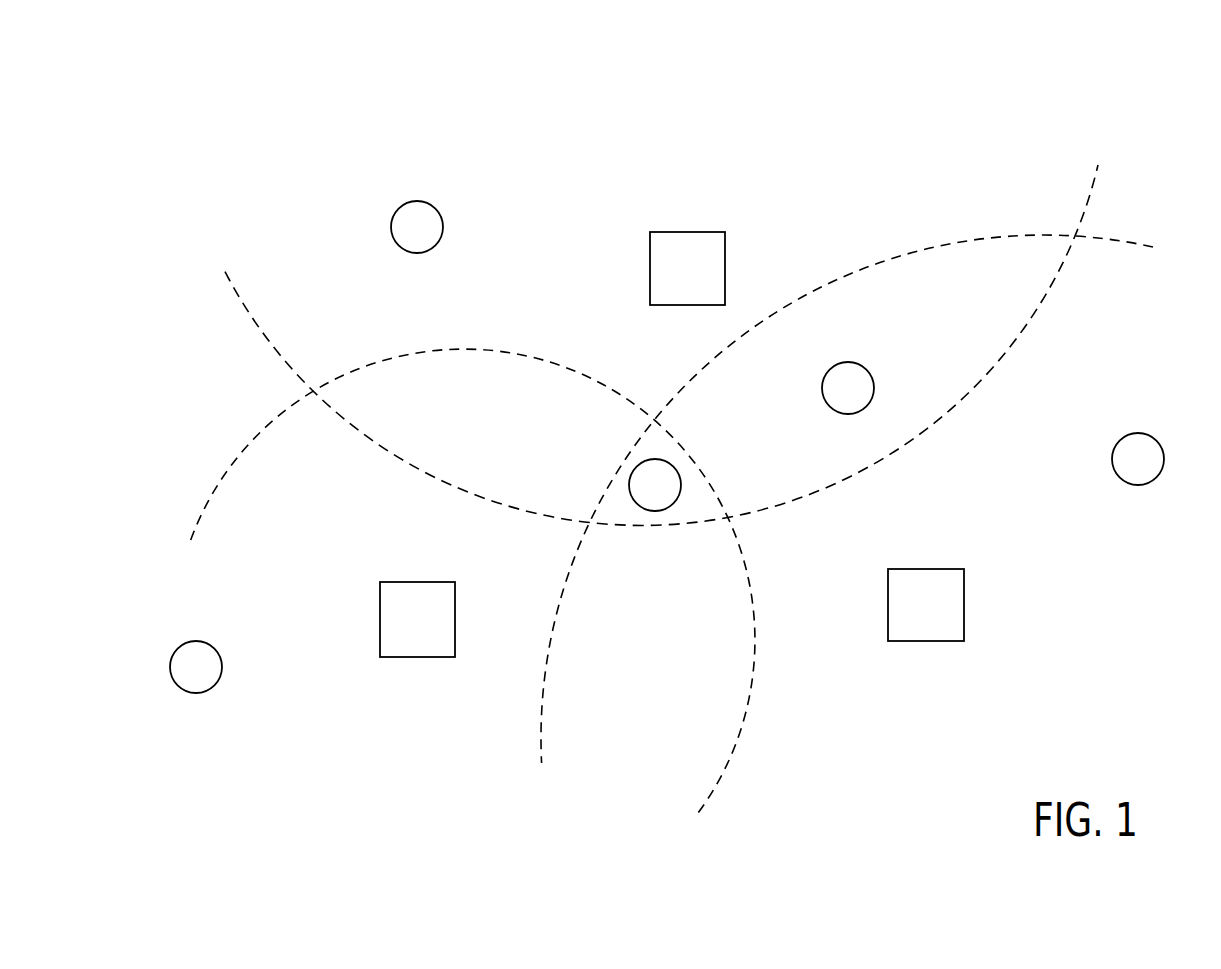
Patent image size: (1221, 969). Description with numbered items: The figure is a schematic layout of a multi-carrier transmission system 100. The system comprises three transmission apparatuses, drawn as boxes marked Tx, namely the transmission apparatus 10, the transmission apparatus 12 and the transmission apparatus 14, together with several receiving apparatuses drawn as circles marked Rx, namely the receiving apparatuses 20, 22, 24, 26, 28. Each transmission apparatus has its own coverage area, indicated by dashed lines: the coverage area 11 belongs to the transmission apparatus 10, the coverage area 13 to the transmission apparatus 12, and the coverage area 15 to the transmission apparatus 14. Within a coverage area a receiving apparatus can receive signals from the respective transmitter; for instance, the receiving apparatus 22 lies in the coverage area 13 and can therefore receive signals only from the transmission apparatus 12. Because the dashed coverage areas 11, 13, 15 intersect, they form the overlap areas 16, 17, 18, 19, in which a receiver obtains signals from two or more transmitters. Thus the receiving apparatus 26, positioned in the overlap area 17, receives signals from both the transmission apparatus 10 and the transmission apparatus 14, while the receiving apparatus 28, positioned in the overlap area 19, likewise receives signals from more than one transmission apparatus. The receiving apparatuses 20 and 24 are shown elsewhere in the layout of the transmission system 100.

The multi-carrier transmission system 100 is at (1098, 125).
The transmission apparatus 10 is at (695, 230).
The transmission apparatus 12 is at (420, 658).
The transmission apparatus 14 is at (925, 641).
The coverage area 11 is at (247, 302).
The coverage area 13 is at (235, 463).
The coverage area 15 is at (1121, 242).
The overlap area 16 is at (345, 390).
The overlap area 17 is at (1033, 252).
The overlap area 18 is at (740, 606).
The overlap area 19 is at (703, 492).
The receiving apparatus 20 is at (418, 200).
The receiving apparatus 22 is at (205, 694).
The receiving apparatus 24 is at (1137, 486).
The receiving apparatus 26 is at (869, 370).
The receiving apparatus 28 is at (655, 512).